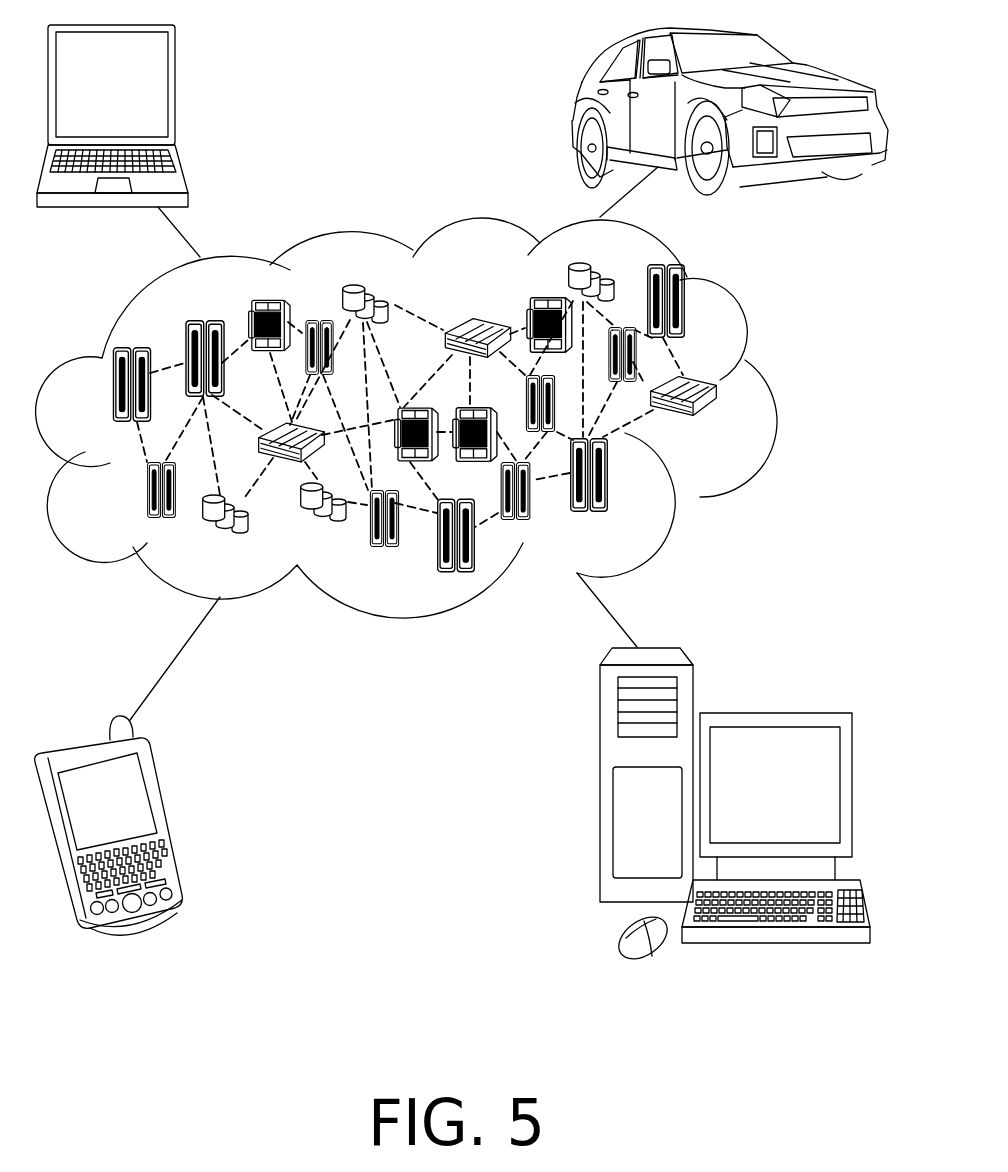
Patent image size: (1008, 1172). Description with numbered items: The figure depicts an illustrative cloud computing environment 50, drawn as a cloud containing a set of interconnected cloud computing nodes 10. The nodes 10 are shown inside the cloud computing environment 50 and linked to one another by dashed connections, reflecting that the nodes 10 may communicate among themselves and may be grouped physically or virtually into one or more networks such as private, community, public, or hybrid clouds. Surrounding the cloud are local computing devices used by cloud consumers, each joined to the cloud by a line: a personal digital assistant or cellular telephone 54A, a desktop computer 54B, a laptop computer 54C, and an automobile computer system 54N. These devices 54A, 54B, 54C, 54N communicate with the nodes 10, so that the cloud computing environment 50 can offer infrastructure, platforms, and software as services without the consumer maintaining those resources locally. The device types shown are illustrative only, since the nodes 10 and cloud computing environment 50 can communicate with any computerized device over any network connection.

The cloud computing nodes 10 is at (718, 426).
The cloud computing environment 50 is at (772, 396).
The personal digital assistant (PDA) or cellular telephone 54A is at (167, 818).
The desktop computer 54B is at (772, 713).
The laptop computer 54C is at (175, 95).
The automobile computer system 54N is at (575, 110).